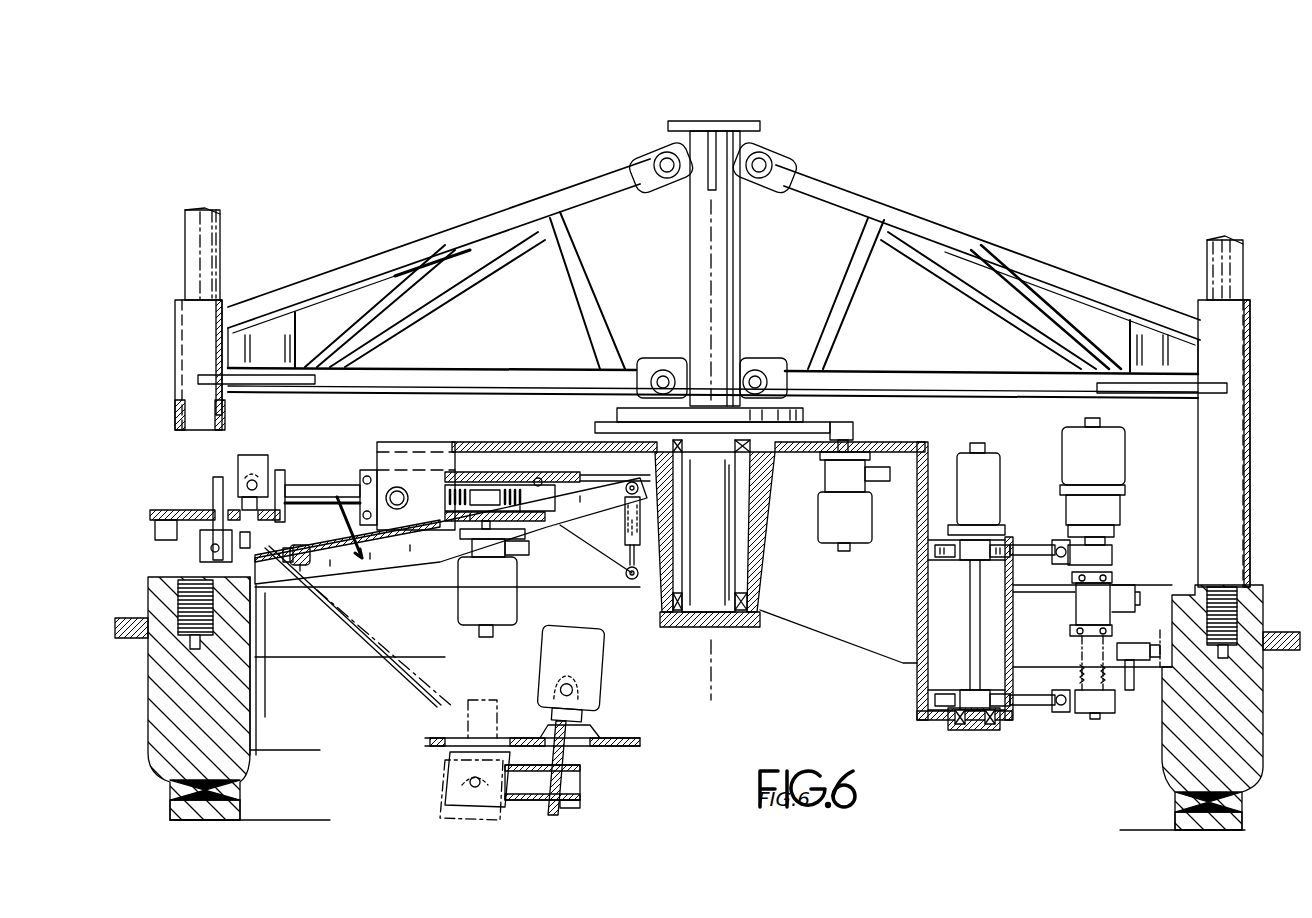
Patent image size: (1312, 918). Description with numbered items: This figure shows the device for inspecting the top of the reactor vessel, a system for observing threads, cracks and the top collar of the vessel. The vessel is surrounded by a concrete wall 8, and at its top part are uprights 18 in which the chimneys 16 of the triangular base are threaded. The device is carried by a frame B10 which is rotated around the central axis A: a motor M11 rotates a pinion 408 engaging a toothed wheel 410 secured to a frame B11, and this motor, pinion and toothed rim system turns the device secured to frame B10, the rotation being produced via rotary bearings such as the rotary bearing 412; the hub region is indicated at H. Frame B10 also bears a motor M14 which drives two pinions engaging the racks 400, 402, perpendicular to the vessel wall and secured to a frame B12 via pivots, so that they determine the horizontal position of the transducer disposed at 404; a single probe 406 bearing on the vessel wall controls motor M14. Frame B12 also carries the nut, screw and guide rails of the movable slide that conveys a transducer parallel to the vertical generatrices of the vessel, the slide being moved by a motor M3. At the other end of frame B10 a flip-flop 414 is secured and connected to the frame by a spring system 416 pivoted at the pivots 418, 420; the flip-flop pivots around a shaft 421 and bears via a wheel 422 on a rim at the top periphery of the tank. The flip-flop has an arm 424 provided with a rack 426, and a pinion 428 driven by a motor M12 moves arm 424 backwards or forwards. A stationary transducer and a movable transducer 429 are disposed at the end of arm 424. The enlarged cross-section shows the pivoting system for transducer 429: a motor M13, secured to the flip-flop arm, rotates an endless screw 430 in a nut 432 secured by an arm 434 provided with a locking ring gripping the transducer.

The concrete wall 8 is at (1255, 706).
The chimneys 16 is at (212, 302).
The uprights 18 is at (218, 245).
The axis A is at (714, 410).
The frame B10 is at (520, 440).
The frame B11 is at (758, 315).
The frame B12 is at (1105, 552).
The hub plate H is at (812, 432).
The motor M3 is at (1090, 467).
The motor M11 is at (838, 526).
The motor M12 is at (482, 599).
The motor M13 is at (262, 468).
The motor M14 is at (990, 470).
The rack 400 is at (1036, 548).
The rack 402 is at (1050, 756).
The transducer location 404 is at (1125, 598).
The probe 406 is at (1150, 677).
The pinion 408 is at (856, 418).
The toothed wheel 410 is at (835, 422).
The rotary bearing 412 is at (735, 614).
The flip-flop 414 is at (430, 570).
The spring system 416 is at (622, 522).
The pivot 418 is at (640, 580).
The pivot 420 is at (624, 485).
The shaft 421 is at (393, 512).
The wheel 422 is at (264, 592).
The arm 424 is at (350, 492).
The rack 426 is at (178, 515).
The pinion 428 is at (471, 479).
The movable transducer 429 is at (205, 540).
The endless screw 430 is at (580, 754).
The nut 432 is at (582, 786).
The arm 434 is at (545, 808).